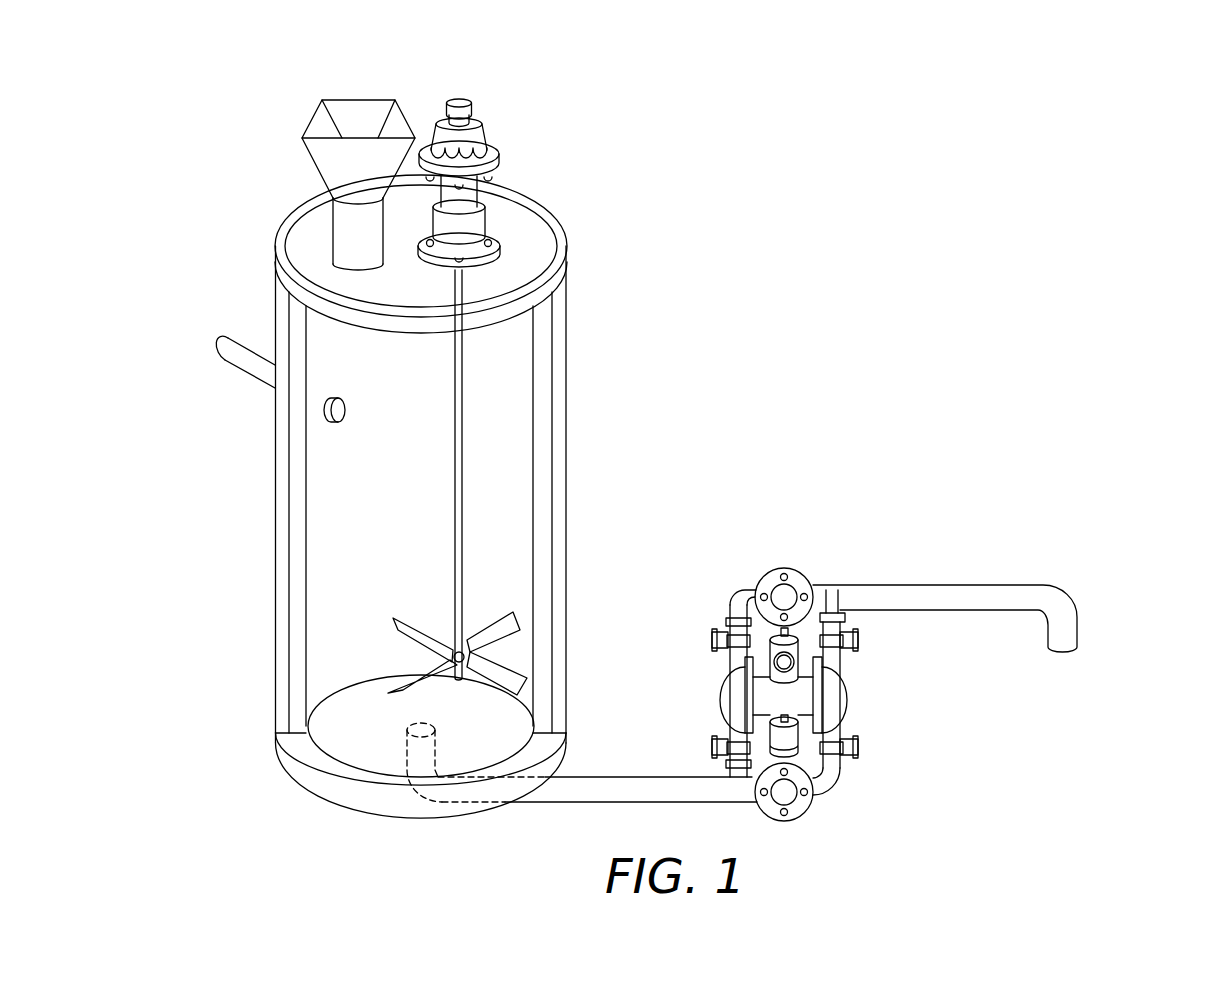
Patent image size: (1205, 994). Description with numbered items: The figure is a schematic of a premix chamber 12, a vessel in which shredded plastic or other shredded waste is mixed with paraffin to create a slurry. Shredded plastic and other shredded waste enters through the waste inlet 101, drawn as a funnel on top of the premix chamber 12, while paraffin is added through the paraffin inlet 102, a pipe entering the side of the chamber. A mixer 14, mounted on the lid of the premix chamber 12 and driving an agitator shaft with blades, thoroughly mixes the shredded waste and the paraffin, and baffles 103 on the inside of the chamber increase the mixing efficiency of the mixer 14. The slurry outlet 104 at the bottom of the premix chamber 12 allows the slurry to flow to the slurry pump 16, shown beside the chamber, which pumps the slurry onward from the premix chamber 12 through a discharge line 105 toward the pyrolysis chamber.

The premix chamber 12 is at (566, 422).
The mixer 14 is at (500, 152).
The pump 16 is at (847, 695).
The waste inlet 101 is at (317, 123).
The paraffin inlet 102 is at (247, 350).
The baffles 103 is at (302, 502).
The slurry outlet 104 is at (582, 800).
The discharge pipe 105 is at (1068, 605).